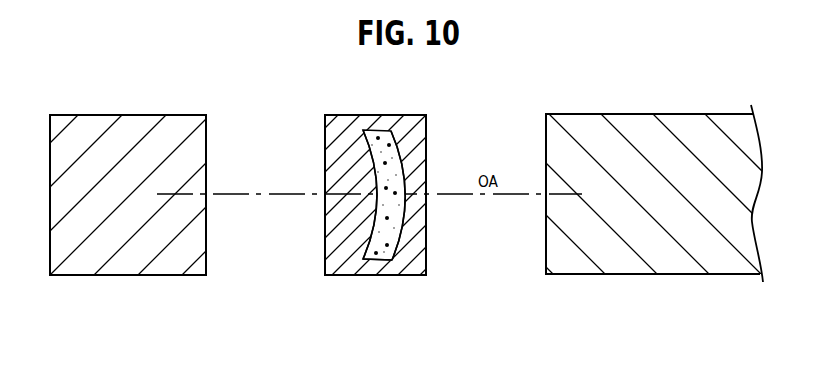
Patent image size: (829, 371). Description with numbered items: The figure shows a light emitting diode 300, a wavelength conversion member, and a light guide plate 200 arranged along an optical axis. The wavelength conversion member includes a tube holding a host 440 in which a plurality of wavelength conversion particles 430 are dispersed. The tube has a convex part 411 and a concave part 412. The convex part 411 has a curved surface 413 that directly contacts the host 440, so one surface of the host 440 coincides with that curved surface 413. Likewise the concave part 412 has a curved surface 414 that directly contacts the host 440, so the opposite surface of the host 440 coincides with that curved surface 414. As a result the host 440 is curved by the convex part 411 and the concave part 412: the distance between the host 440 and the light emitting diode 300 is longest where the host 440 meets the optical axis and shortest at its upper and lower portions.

The object / display 200 is at (655, 253).
The light emitting diode 300 is at (127, 253).
The convex part 411 is at (337, 220).
The concave part 412 is at (418, 220).
The curved surface 413 is at (368, 155).
The curved surface 414 is at (405, 155).
The wavelength conversion particles 430 is at (377, 252).
The host 440 is at (388, 132).